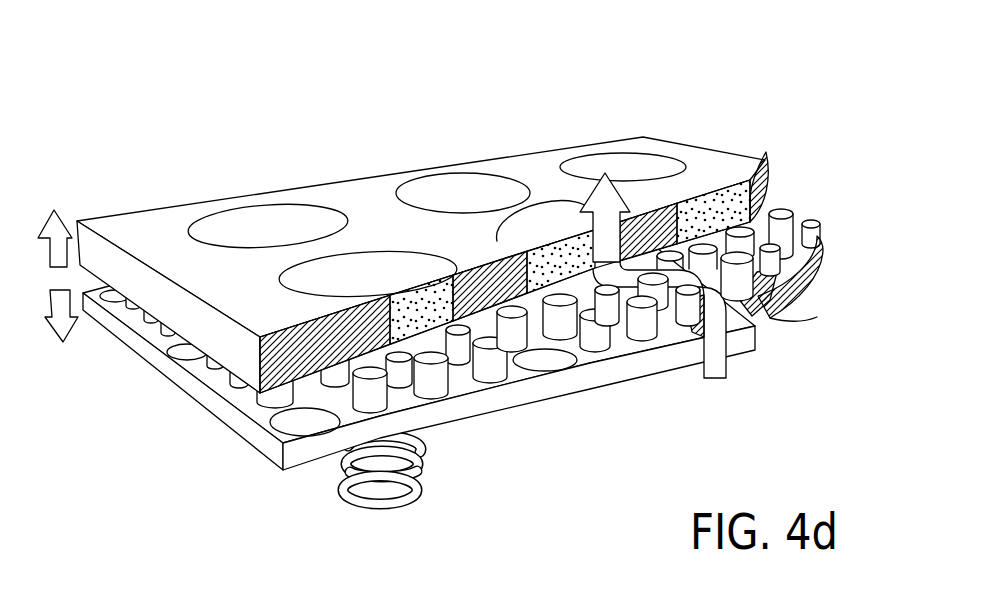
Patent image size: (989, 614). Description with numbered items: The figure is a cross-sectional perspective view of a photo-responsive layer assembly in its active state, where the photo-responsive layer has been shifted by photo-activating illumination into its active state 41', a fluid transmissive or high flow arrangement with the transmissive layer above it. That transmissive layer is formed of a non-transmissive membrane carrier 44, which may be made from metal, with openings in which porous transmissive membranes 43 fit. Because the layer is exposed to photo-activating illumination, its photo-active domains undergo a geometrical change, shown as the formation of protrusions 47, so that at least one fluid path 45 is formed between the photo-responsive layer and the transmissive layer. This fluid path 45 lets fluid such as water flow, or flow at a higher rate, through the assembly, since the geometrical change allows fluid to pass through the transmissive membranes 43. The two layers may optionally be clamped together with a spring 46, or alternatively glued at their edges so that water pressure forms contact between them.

The photo-responsive layer in active state 41' is at (419, 318).
The porous transmissive membranes 43 is at (440, 190).
The membrane carrier 44 is at (480, 300).
The fluid path 45 is at (727, 350).
The spring 46 is at (418, 480).
The protrusions 47 is at (805, 316).